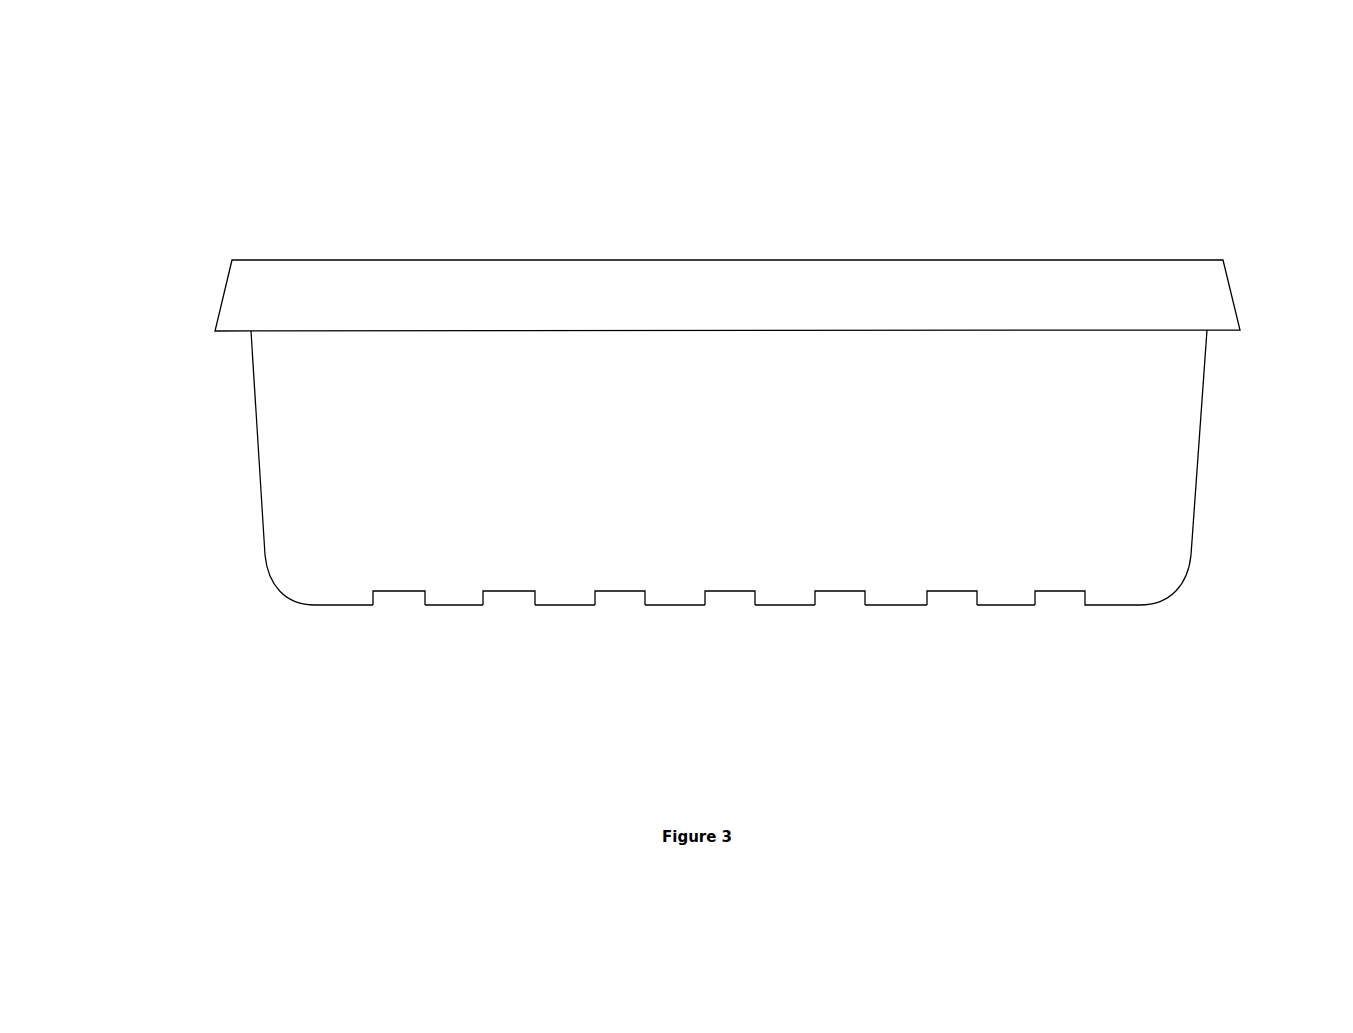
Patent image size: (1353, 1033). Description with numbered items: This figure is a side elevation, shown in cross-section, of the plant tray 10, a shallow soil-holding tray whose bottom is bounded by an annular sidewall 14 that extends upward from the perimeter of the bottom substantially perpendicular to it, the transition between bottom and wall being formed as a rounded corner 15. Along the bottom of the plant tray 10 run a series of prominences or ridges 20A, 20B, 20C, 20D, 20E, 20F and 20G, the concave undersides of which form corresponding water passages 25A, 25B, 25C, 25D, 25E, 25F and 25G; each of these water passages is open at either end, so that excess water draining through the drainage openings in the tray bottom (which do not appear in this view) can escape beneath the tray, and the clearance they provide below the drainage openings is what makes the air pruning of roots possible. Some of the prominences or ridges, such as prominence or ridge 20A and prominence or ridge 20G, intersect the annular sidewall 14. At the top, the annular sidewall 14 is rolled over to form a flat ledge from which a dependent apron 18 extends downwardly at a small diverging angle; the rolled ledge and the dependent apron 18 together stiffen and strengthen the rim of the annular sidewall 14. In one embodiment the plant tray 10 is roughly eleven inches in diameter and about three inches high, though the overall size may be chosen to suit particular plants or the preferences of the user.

The plant tray 10 is at (266, 86).
The annular sidewall 14 is at (1206, 372).
The rounded corner 15 is at (267, 580).
The dependent apron 18 is at (361, 288).
The prominence or ridge 20A is at (385, 602).
The prominence or ridge 20B is at (492, 600).
The prominence or ridge 20C is at (607, 597).
The prominence or ridge 20D is at (717, 598).
The prominence or ridge 20E is at (827, 596).
The prominence or ridge 20F is at (1048, 594).
The prominence or ridge 20G is at (963, 601).
The water passage 25A is at (395, 607).
The water passage 25B is at (503, 608).
The water passage 25C is at (622, 606).
The water passage 25D is at (738, 604).
The water passage 25E is at (1077, 596).
The water passage 25F is at (850, 611).
The water passage 25G is at (937, 596).